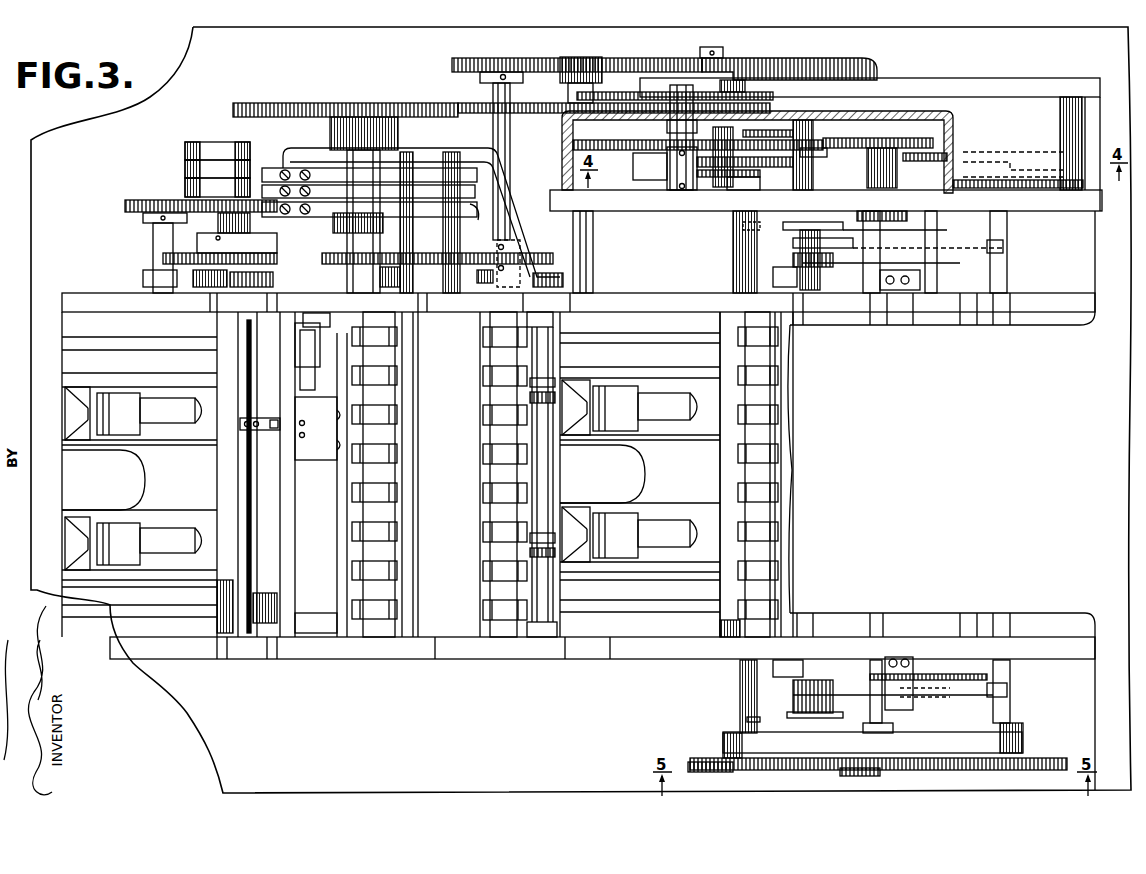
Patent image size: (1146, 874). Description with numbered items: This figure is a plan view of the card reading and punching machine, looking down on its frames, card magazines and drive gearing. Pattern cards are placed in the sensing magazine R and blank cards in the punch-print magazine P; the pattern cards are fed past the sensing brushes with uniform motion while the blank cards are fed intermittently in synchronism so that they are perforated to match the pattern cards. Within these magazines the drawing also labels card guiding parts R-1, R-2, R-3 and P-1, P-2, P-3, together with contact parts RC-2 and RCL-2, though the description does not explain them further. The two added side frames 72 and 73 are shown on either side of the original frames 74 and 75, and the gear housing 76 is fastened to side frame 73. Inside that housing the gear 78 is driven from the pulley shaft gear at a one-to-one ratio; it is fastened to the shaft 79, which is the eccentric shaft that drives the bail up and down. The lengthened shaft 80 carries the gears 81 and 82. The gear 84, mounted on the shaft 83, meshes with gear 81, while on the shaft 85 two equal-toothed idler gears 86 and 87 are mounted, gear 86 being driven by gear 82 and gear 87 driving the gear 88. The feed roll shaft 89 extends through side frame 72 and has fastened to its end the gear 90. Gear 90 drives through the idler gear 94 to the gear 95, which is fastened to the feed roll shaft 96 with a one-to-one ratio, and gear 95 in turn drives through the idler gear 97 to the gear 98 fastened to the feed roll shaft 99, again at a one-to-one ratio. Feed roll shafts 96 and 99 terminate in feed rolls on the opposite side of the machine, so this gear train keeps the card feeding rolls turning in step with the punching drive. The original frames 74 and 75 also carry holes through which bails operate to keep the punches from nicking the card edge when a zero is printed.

The side frame 72 is at (967, 740).
The side frame 73 is at (1035, 206).
The original frame 74 is at (1040, 640).
The original frame 75 is at (1040, 291).
The gear housing 76 is at (1066, 126).
The gear 78 is at (893, 140).
The eccentric shaft 79 is at (896, 172).
The shaft 80 is at (590, 57).
The gear 81 is at (652, 52).
The gear 82 is at (535, 114).
The shaft 83 is at (511, 58).
The gear 84 is at (452, 64).
The shaft 85 is at (355, 103).
The idler gear 86 is at (266, 103).
The idler gear 87 is at (472, 206).
The gear 88 is at (127, 201).
The feed roll shaft 89 is at (740, 264).
The gear 90 is at (698, 764).
The idler gear 94 is at (792, 771).
The gear 95 is at (862, 771).
The feed roll shaft 96 is at (877, 703).
The idler gear 97 is at (920, 770).
The gear 98 is at (1043, 760).
The feed roll shaft 99 is at (1010, 707).
The gear R-1 is at (185, 147).
The gear R-2 is at (185, 165).
The gear R-3 is at (185, 184).
The bar P-1 is at (430, 167).
The bar P-2 is at (460, 167).
The bar P-3 is at (420, 208).
The contact RC-2 is at (320, 334).
The contact lever RCL-2 is at (320, 334).
The sensing magazine R is at (139, 474).
The punch-print magazine P is at (640, 474).